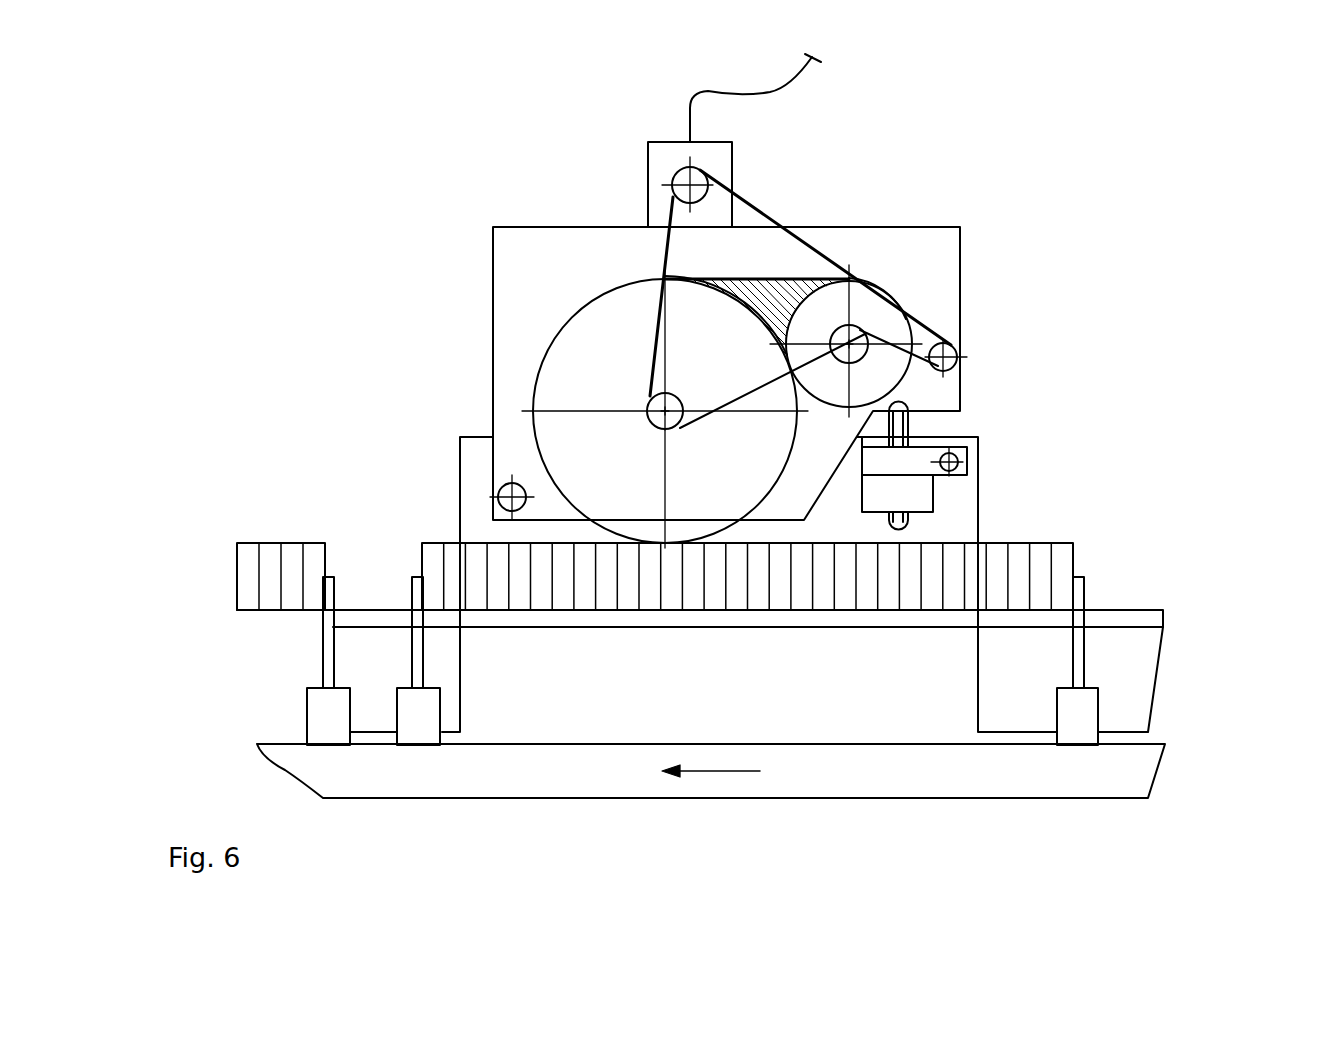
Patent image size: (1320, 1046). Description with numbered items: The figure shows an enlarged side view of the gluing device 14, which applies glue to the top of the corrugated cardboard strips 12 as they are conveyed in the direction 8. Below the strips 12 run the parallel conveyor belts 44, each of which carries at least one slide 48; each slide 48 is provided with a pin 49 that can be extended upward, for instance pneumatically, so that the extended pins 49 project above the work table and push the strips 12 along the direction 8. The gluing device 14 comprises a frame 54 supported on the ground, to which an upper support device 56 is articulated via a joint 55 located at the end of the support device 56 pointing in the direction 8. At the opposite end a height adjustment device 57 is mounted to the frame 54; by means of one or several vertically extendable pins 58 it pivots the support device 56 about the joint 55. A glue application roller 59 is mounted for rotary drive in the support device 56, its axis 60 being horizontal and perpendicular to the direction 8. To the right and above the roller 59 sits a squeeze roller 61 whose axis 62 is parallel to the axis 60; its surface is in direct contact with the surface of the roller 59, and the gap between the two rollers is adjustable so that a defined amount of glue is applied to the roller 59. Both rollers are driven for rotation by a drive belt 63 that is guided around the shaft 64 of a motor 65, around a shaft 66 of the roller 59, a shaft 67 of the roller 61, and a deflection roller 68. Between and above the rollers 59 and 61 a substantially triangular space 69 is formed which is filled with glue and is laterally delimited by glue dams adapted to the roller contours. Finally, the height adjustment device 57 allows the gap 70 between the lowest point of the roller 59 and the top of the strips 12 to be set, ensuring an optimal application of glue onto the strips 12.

The direction 8 is at (710, 773).
The strips 12 is at (1063, 567).
The gluing device 14 is at (650, 132).
The conveyor belts 44 is at (854, 748).
The slide 48 is at (402, 723).
The pin 49 is at (415, 655).
The frame 54 is at (470, 460).
The joint 55 is at (500, 492).
The support device 56 is at (500, 315).
The height adjustment device 57 is at (958, 458).
The pins 58 is at (898, 422).
The glue application roller 59 is at (550, 365).
The axis 60 is at (650, 395).
The squeeze roller 61 is at (855, 280).
The axis 62 is at (910, 318).
The drive belt 63 is at (663, 213).
The shaft 64 is at (672, 178).
The motor 65 is at (657, 156).
The shaft 66 is at (650, 417).
The shaft 67 is at (862, 358).
The deflection roller 68 is at (957, 357).
The triangular space 69 is at (767, 278).
The gap 70 is at (705, 543).